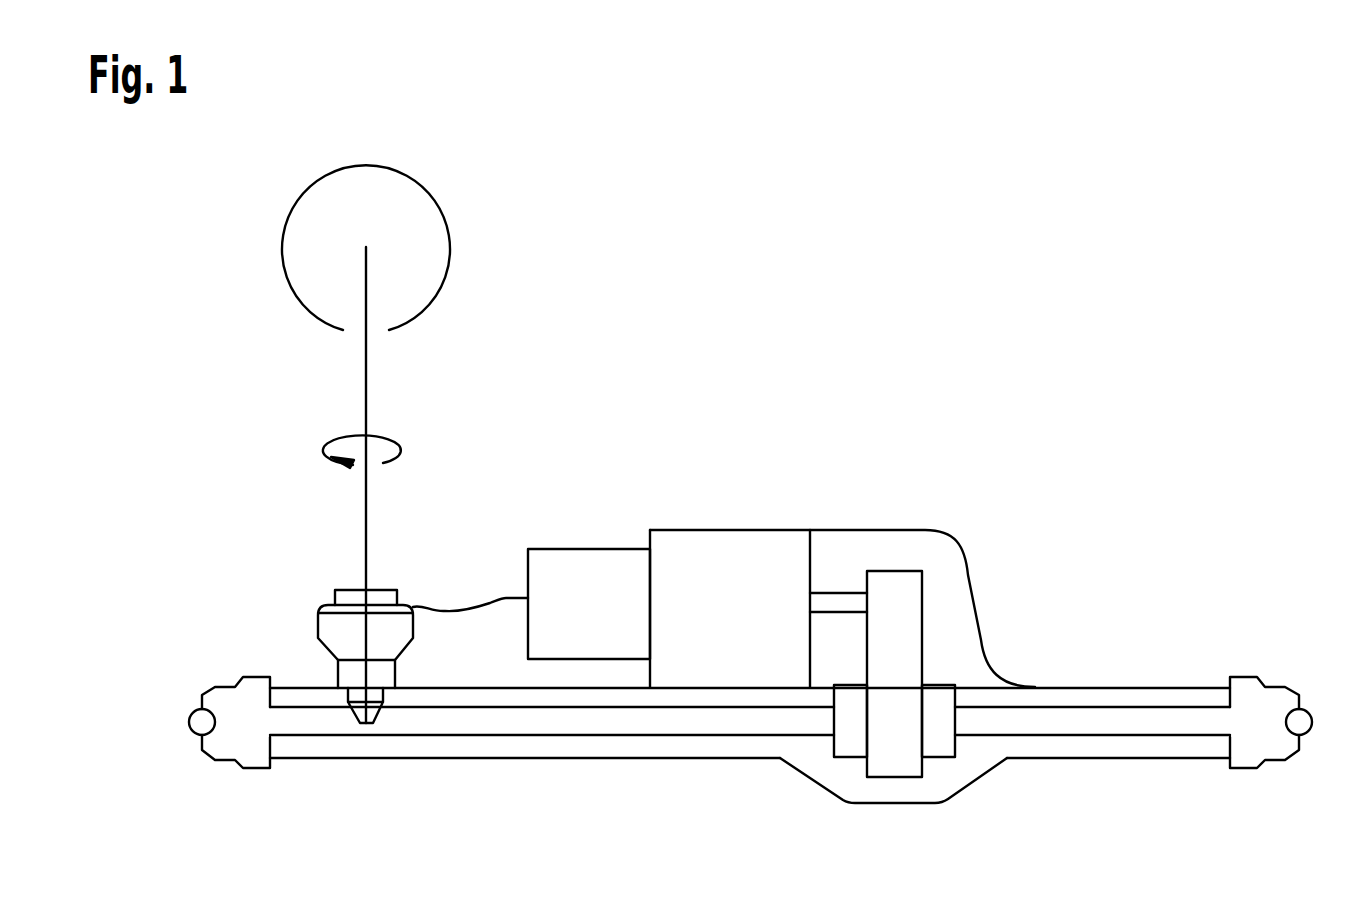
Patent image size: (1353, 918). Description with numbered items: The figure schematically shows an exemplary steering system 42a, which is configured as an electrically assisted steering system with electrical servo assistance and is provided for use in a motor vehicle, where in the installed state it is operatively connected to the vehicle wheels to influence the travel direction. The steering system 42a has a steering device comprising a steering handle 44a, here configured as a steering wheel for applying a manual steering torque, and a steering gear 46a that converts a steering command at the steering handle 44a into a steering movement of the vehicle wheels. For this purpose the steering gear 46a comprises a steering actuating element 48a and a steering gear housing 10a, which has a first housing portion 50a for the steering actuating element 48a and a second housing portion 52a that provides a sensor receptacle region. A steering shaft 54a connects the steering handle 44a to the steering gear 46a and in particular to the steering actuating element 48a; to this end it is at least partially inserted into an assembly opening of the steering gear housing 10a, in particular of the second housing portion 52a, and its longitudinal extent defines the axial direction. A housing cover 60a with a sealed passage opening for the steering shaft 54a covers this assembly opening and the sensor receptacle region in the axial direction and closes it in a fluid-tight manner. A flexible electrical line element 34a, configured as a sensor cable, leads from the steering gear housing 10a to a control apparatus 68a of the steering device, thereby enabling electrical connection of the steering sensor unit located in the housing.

The steering handle 44a is at (490, 228).
The steering shaft 54a is at (425, 416).
The housing cover 60a is at (340, 577).
The second housing portion 52a is at (312, 615).
The electrical line element 34a is at (460, 612).
The control apparatus 68a is at (585, 567).
The steering gear 46a is at (1007, 597).
The steering gear housing 10a is at (1032, 645).
The steering system 42a is at (1025, 308).
The steering actuating element 48a is at (570, 723).
The first housing portion 50a is at (447, 762).